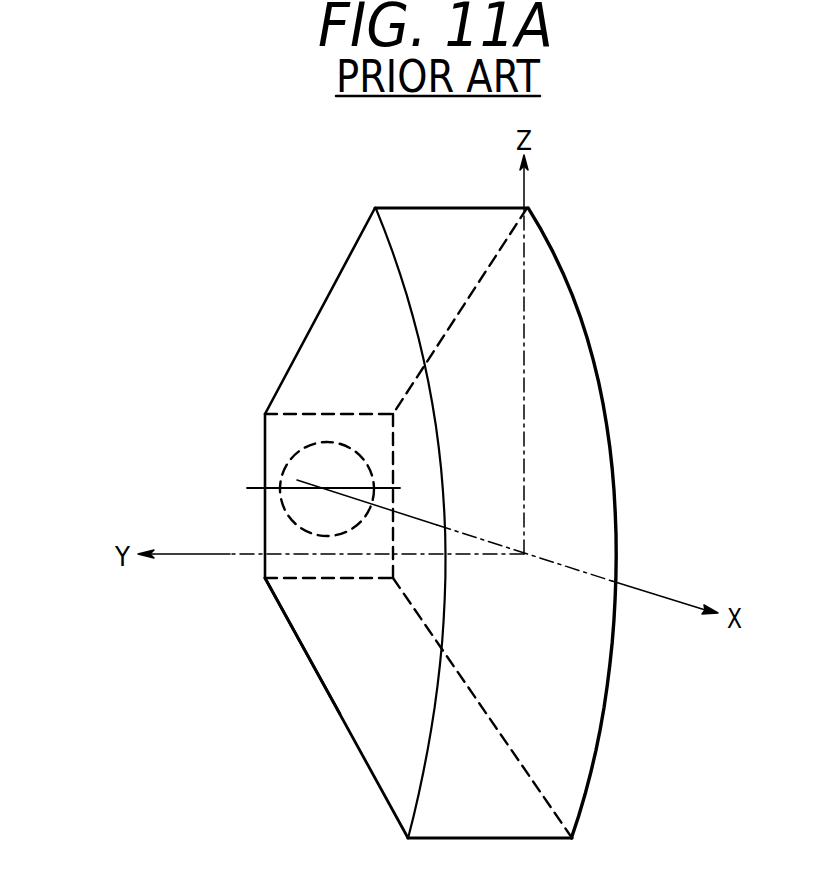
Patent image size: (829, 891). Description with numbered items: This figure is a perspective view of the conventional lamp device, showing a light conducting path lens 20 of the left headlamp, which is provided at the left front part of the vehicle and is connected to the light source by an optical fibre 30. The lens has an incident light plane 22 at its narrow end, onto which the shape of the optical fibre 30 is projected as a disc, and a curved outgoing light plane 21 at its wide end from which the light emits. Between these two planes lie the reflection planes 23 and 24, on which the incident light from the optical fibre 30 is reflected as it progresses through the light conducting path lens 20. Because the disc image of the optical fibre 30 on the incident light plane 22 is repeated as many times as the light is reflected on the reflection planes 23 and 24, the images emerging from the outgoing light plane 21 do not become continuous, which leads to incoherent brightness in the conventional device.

The light conducting path lens 20 is at (337, 712).
The outgoing light plane 21 is at (590, 738).
The incident light plane 22 is at (278, 437).
The reflection plane 23 is at (325, 330).
The reflection plane 24 is at (323, 648).
The optical fibre 30 is at (295, 518).